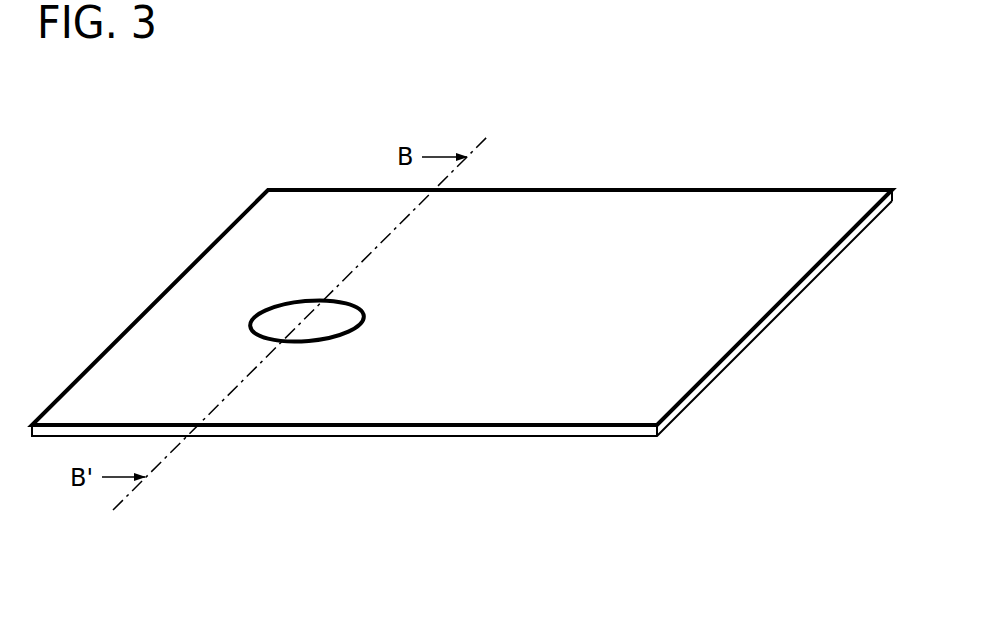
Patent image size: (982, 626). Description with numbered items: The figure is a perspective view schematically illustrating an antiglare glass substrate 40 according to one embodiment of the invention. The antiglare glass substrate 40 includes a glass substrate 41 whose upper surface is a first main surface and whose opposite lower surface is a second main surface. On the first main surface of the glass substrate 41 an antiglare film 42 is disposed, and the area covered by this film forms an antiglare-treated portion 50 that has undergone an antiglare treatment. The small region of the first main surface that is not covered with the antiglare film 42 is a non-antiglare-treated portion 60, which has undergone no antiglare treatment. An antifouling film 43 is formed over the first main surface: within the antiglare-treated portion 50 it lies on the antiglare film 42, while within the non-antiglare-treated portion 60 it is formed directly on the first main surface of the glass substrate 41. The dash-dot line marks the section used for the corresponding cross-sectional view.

The antiglare glass substrate 40 is at (462, 218).
The glass substrate 41 is at (748, 340).
The antiglare film 42 is at (787, 299).
The antifouling film 43 is at (819, 212).
The antiglare-treated portion 50 is at (582, 243).
The non-antiglare-treated portion 60 is at (285, 323).